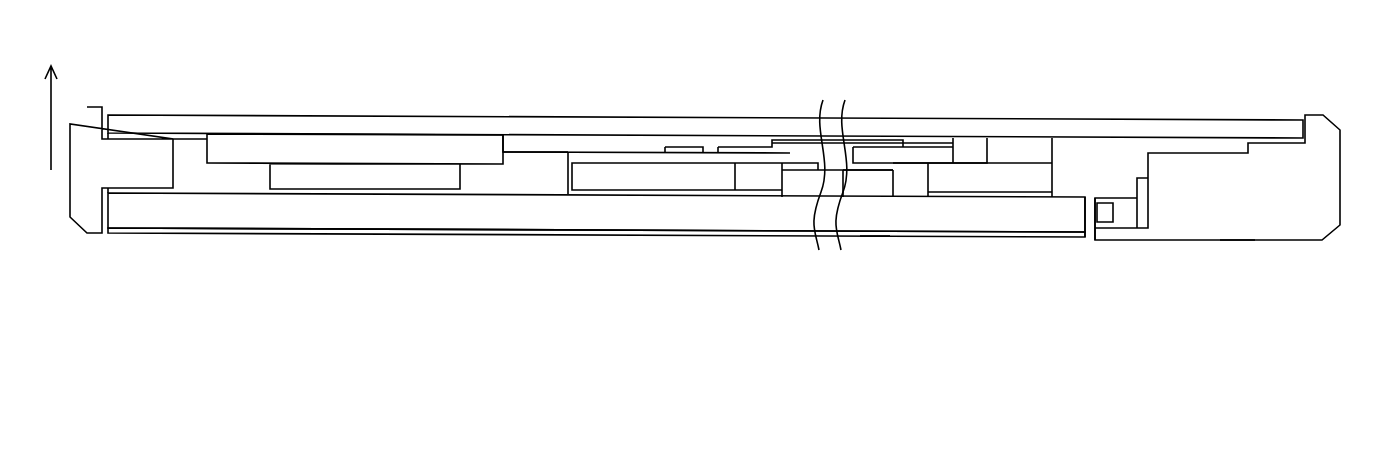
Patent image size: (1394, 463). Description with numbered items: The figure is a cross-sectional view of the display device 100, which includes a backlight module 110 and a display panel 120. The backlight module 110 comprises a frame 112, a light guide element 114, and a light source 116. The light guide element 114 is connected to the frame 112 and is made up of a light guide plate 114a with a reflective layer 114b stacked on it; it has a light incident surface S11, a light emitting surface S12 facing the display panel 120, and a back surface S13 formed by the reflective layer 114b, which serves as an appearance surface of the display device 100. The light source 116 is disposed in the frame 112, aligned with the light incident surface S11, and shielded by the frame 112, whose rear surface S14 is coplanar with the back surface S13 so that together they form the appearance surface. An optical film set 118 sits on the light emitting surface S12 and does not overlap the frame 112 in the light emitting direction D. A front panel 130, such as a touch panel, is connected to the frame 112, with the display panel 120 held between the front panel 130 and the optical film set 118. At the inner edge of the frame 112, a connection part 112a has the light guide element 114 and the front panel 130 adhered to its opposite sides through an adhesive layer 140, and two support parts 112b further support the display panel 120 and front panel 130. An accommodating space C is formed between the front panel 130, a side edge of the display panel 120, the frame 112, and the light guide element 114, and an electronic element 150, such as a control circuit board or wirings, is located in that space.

The display device 100 is at (1298, 31).
The backlight module 110 is at (853, 182).
The frame 112 is at (720, 185).
The connection part 112a is at (162, 161).
The support part 112b is at (662, 178).
The light guide element 114 is at (596, 266).
The light guide plate 114a is at (445, 222).
The reflective layer 114b is at (408, 297).
The light source 116 is at (1105, 219).
The optical film set 118 is at (798, 178).
The display panel 120 is at (847, 150).
The front panel 130 is at (665, 127).
The adhesive layer 140 is at (143, 192).
The electronic element 150 is at (387, 152).
The accommodating space C is at (513, 181).
The light emitting direction D is at (53, 98).
The light incident surface S11 is at (1074, 212).
The light emitting surface S12 is at (873, 190).
The back surface S13 is at (874, 242).
The rear surface S14 is at (1236, 243).